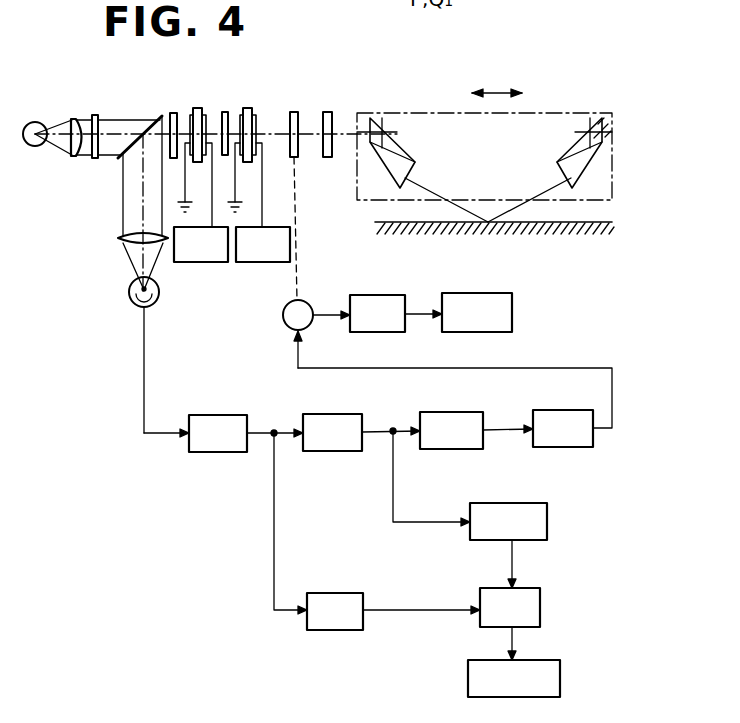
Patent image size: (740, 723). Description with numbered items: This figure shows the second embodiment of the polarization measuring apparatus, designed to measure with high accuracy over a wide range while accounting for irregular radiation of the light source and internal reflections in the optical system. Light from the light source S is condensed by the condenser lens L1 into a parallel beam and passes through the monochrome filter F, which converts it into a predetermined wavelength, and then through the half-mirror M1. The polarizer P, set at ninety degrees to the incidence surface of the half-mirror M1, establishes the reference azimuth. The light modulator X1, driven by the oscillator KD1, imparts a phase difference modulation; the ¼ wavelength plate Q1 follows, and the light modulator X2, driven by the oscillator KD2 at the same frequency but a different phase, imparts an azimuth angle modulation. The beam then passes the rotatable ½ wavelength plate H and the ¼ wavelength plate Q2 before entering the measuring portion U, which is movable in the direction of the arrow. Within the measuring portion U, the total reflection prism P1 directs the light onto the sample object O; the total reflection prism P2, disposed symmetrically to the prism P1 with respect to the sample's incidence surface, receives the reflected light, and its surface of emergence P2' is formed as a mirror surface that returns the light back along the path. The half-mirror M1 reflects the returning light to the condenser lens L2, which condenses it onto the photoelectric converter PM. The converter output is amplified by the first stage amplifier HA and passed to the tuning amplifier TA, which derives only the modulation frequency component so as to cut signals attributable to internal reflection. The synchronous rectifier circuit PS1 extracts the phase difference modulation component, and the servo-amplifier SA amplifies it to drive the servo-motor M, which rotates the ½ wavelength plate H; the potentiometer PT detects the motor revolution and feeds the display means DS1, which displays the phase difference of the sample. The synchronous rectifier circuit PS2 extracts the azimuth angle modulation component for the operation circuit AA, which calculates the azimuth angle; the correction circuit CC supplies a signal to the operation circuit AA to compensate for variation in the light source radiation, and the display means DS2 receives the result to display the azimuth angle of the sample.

The light source S is at (35, 122).
The condenser lens L1 is at (78, 116).
The monochrome filter F is at (97, 114).
The half-mirror M1 is at (143, 124).
The polarizer P is at (172, 113).
The light modulator X1 is at (200, 110).
The ¼ wavelength plate Q1 is at (226, 112).
The light modulator X2 is at (250, 109).
The ½ wavelength plate H is at (293, 112).
The ¼ wavelength plate Q2 is at (327, 112).
The measuring portion U is at (447, 113).
The total reflection prism P1 is at (396, 133).
The total reflection prism P2 is at (550, 150).
The surface of emergence (mirror surface) P2' is at (605, 98).
The sample object O is at (382, 221).
The condenser lens L2 is at (118, 237).
The photoelectric converter PM is at (129, 292).
The oscillator KD1 is at (195, 262).
The oscillator KD2 is at (246, 262).
The servo-motor M is at (310, 300).
The potentiometer PT is at (375, 295).
The display means DS1 is at (474, 293).
The first stage amplifier HA is at (226, 415).
The tuning amplifier TA is at (330, 451).
The synchronous rectifier circuit PS1 is at (437, 449).
The servo-amplifier SA is at (567, 447).
The synchronous rectifier circuit PS2 is at (547, 521).
The operation circuit AA is at (540, 602).
The correction circuit CC is at (331, 593).
The display means DS2 is at (468, 681).